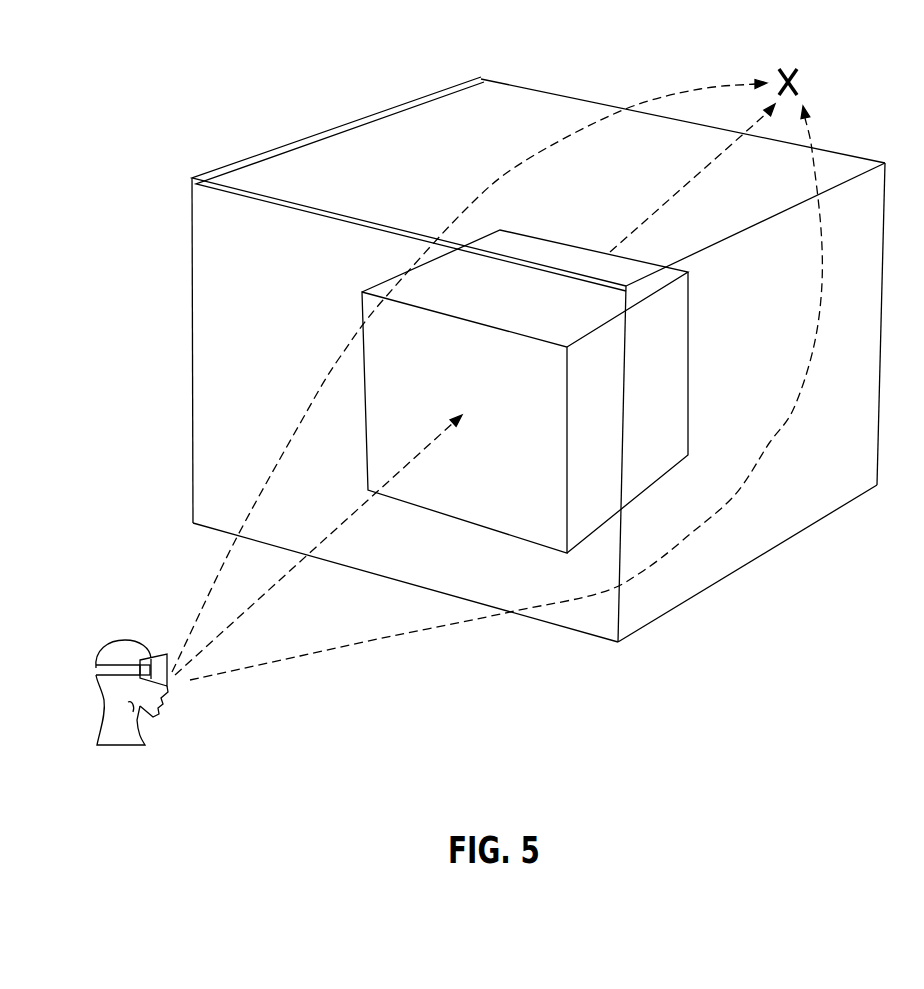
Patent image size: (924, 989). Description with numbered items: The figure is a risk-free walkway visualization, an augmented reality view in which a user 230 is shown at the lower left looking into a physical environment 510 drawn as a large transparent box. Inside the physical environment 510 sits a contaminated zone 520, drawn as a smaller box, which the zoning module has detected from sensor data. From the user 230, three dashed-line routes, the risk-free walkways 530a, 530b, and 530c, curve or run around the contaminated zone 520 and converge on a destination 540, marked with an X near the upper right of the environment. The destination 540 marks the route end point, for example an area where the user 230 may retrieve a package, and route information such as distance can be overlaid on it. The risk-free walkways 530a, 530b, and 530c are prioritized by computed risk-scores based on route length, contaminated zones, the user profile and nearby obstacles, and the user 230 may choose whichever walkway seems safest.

The user 230 is at (125, 641).
The physical environment 510 is at (351, 106).
The contaminated zone 520 is at (690, 362).
The risk-free walkway 530a is at (523, 161).
The risk-free walkway 530b is at (715, 161).
The risk-free walkway 530c is at (771, 442).
The destination 540 is at (790, 66).